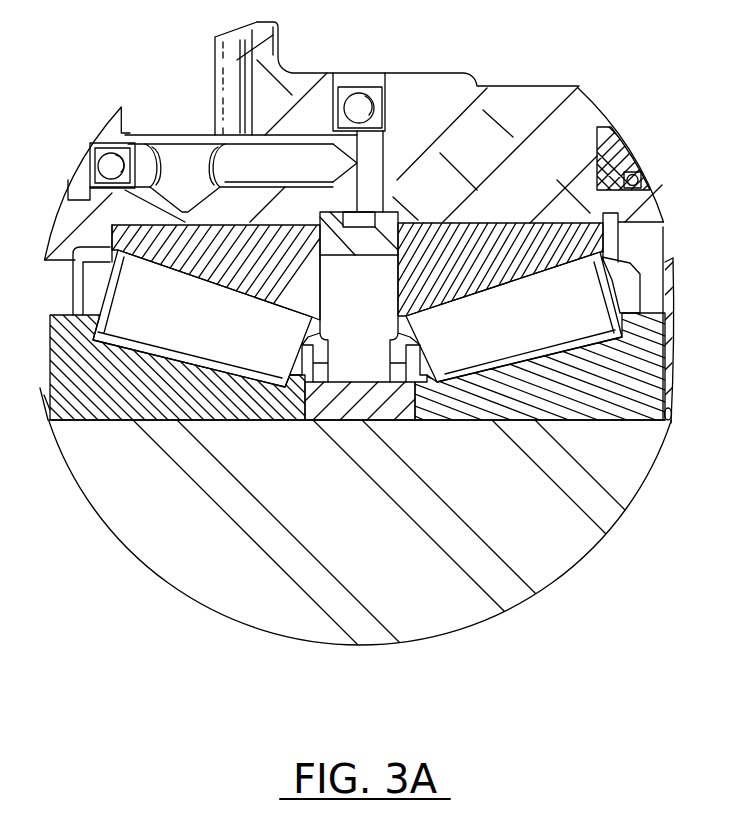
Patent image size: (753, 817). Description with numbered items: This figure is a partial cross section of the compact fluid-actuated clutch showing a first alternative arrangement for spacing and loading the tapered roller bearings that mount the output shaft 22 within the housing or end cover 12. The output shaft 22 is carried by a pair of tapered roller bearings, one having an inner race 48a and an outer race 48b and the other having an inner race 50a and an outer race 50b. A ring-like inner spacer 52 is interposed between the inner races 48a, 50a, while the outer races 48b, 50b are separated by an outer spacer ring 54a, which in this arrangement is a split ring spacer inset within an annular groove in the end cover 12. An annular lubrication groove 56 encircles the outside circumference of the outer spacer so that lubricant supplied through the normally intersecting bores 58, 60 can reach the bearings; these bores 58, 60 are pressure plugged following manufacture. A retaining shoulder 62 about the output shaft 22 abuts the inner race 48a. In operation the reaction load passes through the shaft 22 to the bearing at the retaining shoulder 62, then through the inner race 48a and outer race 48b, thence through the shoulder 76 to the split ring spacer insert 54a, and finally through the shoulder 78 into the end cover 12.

The housing or end cover 12 is at (546, 190).
The output shaft 22 is at (384, 555).
The inner race 48a is at (585, 400).
The outer race 48b is at (503, 266).
The inner race 50a is at (157, 404).
The outer race 50b is at (267, 265).
The inner spacer 52 is at (358, 405).
The outer spacer ring 54a is at (358, 256).
The lubrication groove 56 is at (353, 217).
The bore 58 is at (293, 174).
The bore 60 is at (380, 143).
The retaining shoulder 62 is at (652, 411).
The shoulder 76 is at (398, 250).
The shoulder 78 is at (318, 213).